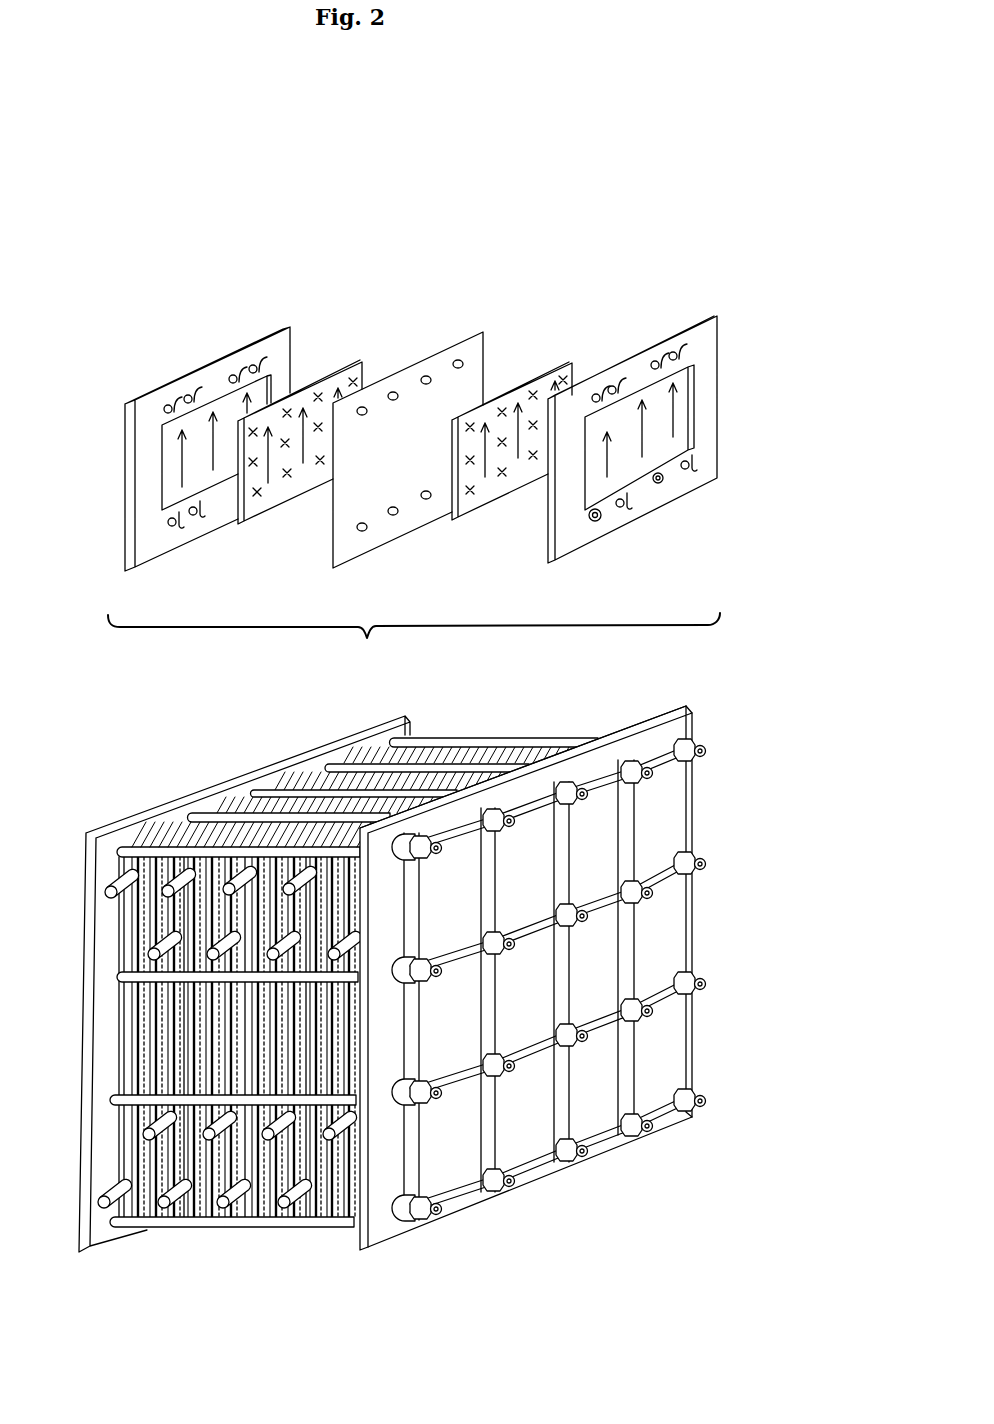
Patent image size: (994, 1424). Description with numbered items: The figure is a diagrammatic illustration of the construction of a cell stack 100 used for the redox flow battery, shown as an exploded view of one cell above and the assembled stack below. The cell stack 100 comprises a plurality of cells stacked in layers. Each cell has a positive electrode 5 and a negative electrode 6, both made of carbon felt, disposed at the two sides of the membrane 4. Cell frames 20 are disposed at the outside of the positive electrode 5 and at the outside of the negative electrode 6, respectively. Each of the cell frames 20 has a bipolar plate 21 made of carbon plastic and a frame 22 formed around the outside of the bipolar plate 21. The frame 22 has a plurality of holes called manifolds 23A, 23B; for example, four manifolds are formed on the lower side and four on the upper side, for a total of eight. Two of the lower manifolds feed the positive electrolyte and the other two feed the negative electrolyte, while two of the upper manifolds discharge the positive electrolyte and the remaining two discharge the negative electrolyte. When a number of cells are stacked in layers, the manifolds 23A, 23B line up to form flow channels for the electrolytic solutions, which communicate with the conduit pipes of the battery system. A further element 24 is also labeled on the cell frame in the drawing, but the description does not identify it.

The membrane 4 is at (432, 356).
The positive electrode 5 is at (333, 376).
The negative electrode 6 is at (530, 370).
The cell frame 20 is at (169, 372).
The bipolar plate 21 is at (683, 410).
The frame 22 is at (710, 342).
The manifold 23A is at (662, 482).
The manifold 23B is at (687, 466).
The seal member 24 is at (602, 396).
The cell stack 100 is at (229, 1251).